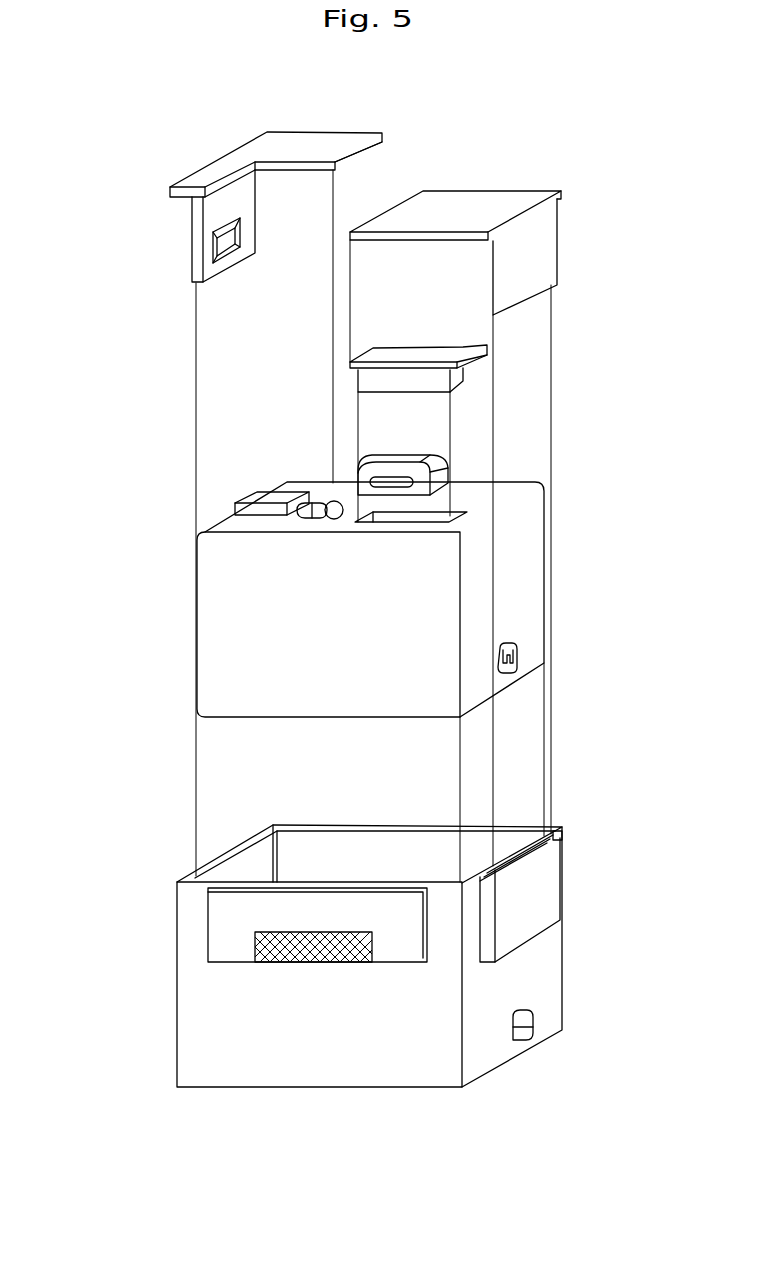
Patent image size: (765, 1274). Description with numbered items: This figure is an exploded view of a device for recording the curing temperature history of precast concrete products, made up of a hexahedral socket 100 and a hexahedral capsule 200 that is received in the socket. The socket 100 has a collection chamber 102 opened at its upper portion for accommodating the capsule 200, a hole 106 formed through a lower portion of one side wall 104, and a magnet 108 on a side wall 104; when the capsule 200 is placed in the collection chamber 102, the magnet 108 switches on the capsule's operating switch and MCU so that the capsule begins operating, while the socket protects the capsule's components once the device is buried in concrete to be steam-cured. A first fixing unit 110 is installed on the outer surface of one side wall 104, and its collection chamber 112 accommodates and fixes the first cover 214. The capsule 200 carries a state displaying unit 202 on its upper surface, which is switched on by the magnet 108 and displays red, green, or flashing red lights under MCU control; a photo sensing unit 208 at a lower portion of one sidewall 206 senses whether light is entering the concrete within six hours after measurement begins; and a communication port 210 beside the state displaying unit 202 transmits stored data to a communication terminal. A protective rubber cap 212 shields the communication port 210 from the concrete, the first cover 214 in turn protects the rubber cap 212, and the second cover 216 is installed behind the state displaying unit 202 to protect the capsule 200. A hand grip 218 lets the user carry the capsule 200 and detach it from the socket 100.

The socket 100 is at (142, 812).
The collection chamber 102 is at (262, 860).
The side wall 104 is at (272, 508).
The hole 106 is at (526, 1029).
The magnet 108 is at (305, 963).
The first fixing unit 110 is at (545, 895).
The collection chamber of the first fixing unit 112 is at (560, 829).
The capsule 200 is at (140, 435).
The state displaying unit 202 is at (329, 502).
The sidewall of the capsule 206 is at (537, 593).
The photo sensing unit 208 is at (509, 668).
The communication port 210 is at (466, 509).
The protective rubber cap 212 is at (412, 356).
The first cover 214 is at (497, 196).
The second cover 216 is at (336, 136).
The hand grip 218 is at (401, 459).